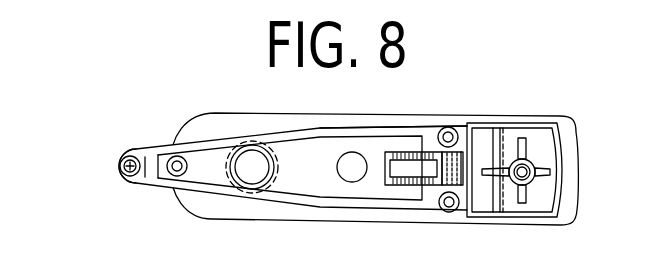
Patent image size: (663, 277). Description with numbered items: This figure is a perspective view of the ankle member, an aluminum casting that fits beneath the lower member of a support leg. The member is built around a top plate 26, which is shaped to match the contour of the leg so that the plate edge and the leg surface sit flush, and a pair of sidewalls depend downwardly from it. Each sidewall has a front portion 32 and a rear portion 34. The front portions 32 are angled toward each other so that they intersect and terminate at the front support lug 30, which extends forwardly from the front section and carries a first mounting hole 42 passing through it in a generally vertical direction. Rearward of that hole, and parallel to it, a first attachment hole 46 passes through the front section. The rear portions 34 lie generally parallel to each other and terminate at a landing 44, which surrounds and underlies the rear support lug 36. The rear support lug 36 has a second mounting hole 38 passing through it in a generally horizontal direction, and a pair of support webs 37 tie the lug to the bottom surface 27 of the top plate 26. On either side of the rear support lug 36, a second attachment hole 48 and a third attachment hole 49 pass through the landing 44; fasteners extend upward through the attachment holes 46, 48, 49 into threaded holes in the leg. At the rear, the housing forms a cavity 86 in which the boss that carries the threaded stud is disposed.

The top plate 26 is at (263, 223).
The bottom surface 27 is at (318, 178).
The front support lug 30 is at (117, 157).
The front portion of sidewall 32 is at (218, 140).
The rear portion of sidewall 34 is at (388, 127).
The rear support lug 36 is at (458, 165).
The support webs 37 is at (400, 178).
The second mounting hole 38 is at (455, 165).
The first mounting hole 42 is at (130, 160).
The landing 44 is at (432, 206).
The first attachment hole 46 is at (173, 174).
The second attachment hole 48 is at (447, 130).
The third attachment hole 49 is at (452, 204).
The cavity 86 is at (540, 148).